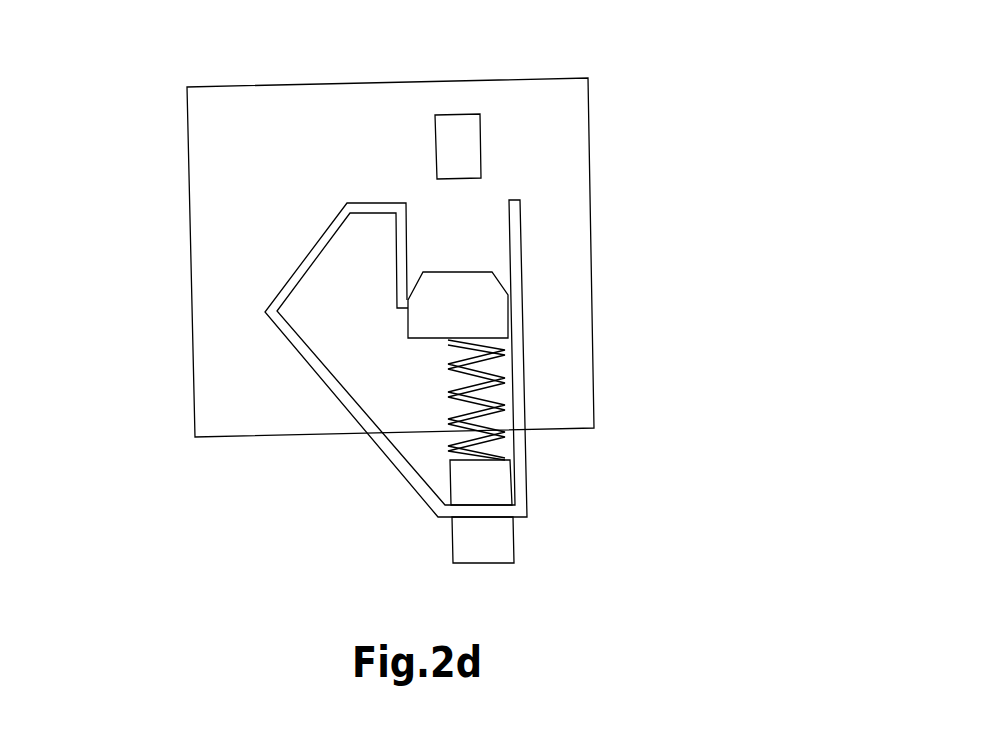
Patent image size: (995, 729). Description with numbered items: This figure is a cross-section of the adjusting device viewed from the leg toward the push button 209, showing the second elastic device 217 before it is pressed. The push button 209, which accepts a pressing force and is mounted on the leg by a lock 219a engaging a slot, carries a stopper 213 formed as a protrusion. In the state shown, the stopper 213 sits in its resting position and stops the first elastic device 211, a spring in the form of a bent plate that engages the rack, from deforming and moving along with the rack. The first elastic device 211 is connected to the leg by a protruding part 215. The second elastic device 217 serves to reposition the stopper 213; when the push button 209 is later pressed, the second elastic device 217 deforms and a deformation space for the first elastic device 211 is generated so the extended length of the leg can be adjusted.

The push button 209 is at (230, 118).
The first elastic device 211 is at (263, 316).
The stopper 213 is at (463, 292).
The protruding part 215 is at (497, 490).
The second elastic device 217 is at (493, 373).
The lock 219a is at (458, 133).